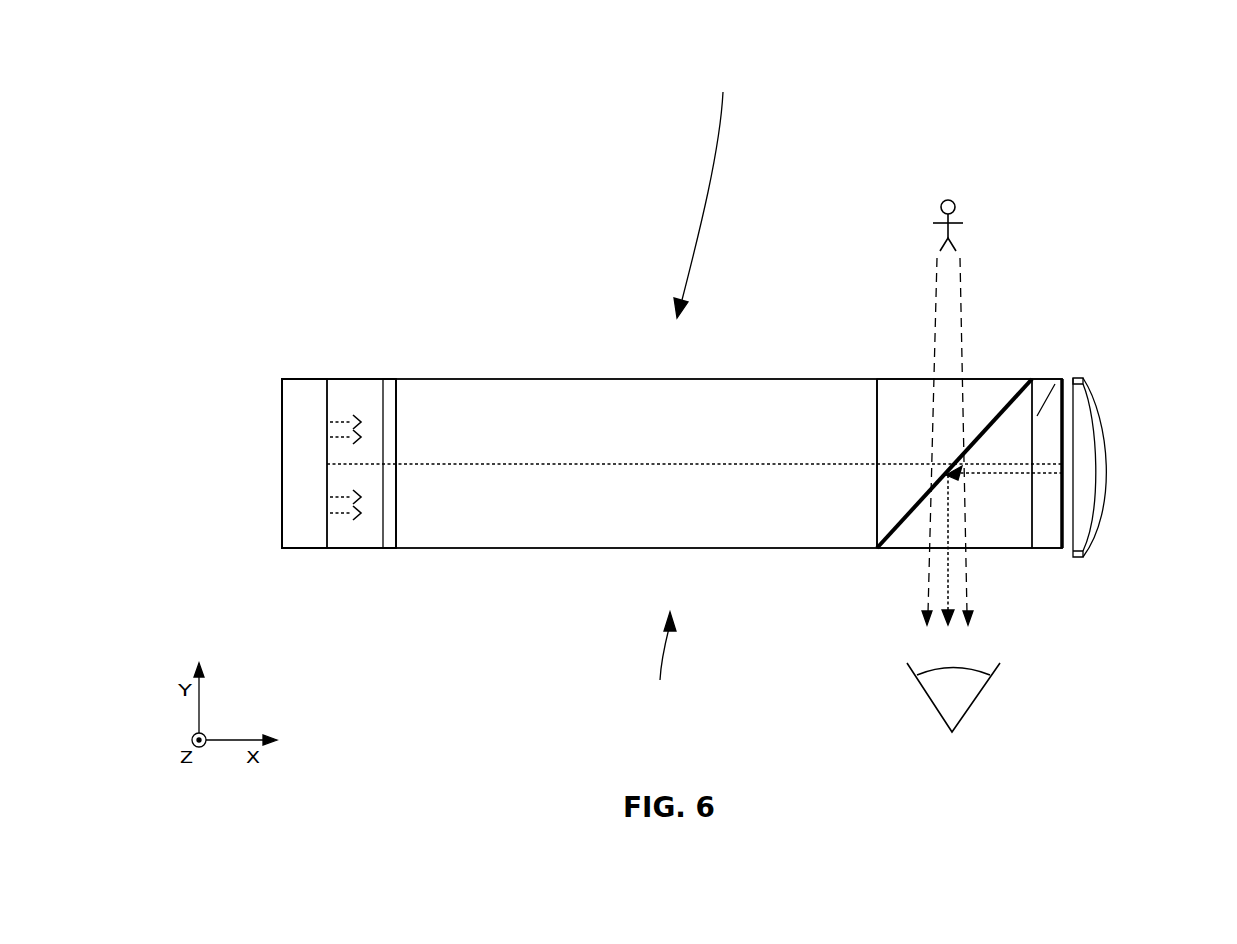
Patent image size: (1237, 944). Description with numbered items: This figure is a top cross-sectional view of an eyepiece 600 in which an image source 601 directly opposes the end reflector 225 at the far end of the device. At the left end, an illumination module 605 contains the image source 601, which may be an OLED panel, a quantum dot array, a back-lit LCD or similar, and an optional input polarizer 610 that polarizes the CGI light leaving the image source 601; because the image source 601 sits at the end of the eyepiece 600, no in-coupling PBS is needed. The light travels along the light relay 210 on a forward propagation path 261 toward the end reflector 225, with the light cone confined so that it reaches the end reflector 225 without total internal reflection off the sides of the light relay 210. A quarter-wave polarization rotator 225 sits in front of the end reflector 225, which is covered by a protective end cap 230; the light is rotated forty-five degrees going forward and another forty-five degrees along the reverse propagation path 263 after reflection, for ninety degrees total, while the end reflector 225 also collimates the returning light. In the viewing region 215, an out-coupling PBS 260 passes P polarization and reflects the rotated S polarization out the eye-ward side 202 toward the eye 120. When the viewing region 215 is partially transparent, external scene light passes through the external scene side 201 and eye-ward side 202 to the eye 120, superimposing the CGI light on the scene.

The eyepiece 600 is at (240, 83).
The illumination module 605 is at (402, 268).
The image source 601 is at (297, 378).
The input polarizer 610 is at (388, 549).
The light relay 210 is at (525, 378).
The external scene side 201 is at (718, 180).
The eye-ward side 202 is at (662, 670).
The viewing region 215 is at (1032, 207).
The out-coupling PBS 260 is at (1032, 378).
The end reflector 225 is at (1135, 597).
The protective end cap 230 is at (1100, 418).
The forward propagation path 261 is at (567, 464).
The reverse propagation path 263 is at (985, 478).
The eye 120 is at (966, 693).